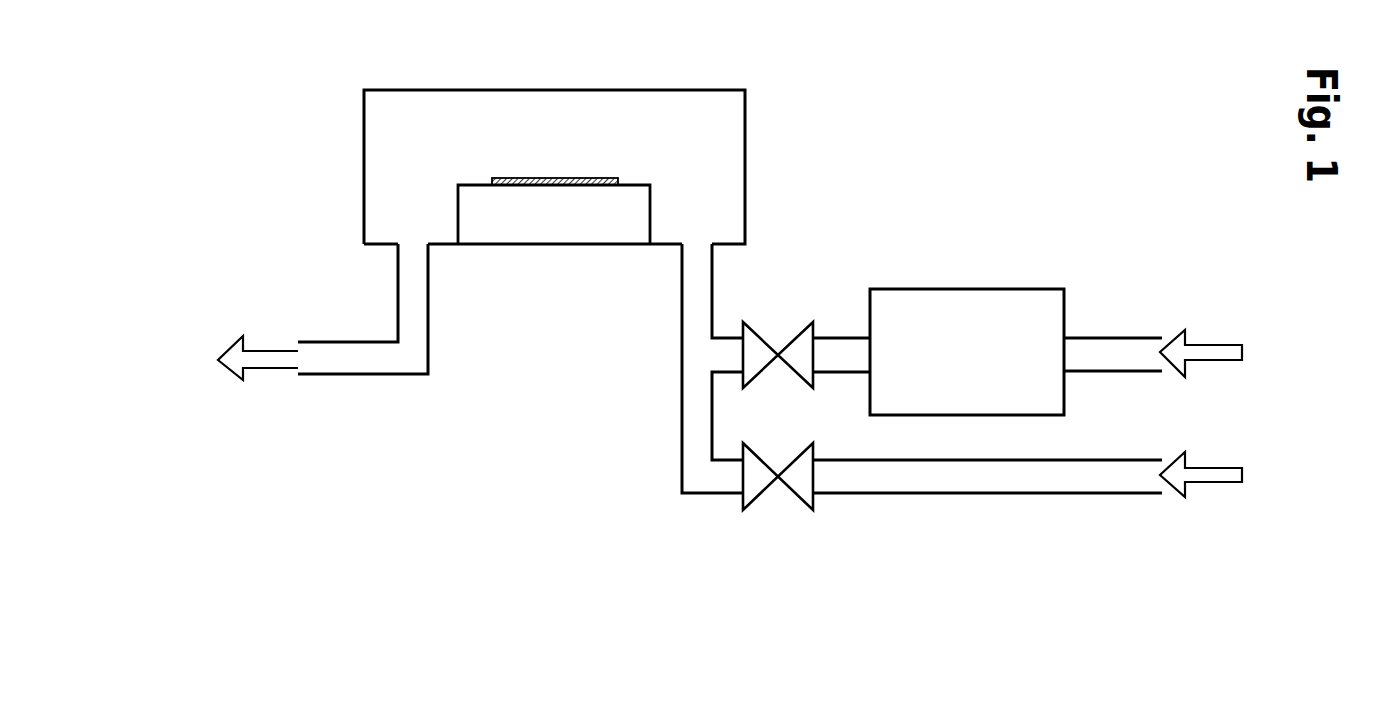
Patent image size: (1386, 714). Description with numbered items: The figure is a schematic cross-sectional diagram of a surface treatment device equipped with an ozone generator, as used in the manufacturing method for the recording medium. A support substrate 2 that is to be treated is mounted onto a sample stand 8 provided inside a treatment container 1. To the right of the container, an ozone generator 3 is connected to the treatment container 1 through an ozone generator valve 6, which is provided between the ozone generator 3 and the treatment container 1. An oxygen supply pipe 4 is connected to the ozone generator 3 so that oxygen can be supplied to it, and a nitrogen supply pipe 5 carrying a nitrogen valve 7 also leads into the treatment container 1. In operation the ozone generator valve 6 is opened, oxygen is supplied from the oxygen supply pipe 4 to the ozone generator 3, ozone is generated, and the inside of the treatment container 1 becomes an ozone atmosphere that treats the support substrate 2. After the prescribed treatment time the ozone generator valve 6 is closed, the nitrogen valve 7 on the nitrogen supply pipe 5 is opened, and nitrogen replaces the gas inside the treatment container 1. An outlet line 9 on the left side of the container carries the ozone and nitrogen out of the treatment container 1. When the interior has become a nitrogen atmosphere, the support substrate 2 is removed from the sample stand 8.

The treatment container 1 is at (570, 90).
The support substrate 2 is at (548, 178).
The ozone generator 3 is at (960, 289).
The oxygen supply pipe 4 is at (1134, 336).
The nitrogen supply pipe 5 is at (1138, 493).
The ozone generator valve 6 is at (800, 333).
The nitrogen valve 7 is at (796, 495).
The sample stand 8 is at (576, 234).
The exhaust pipe 9 is at (312, 376).